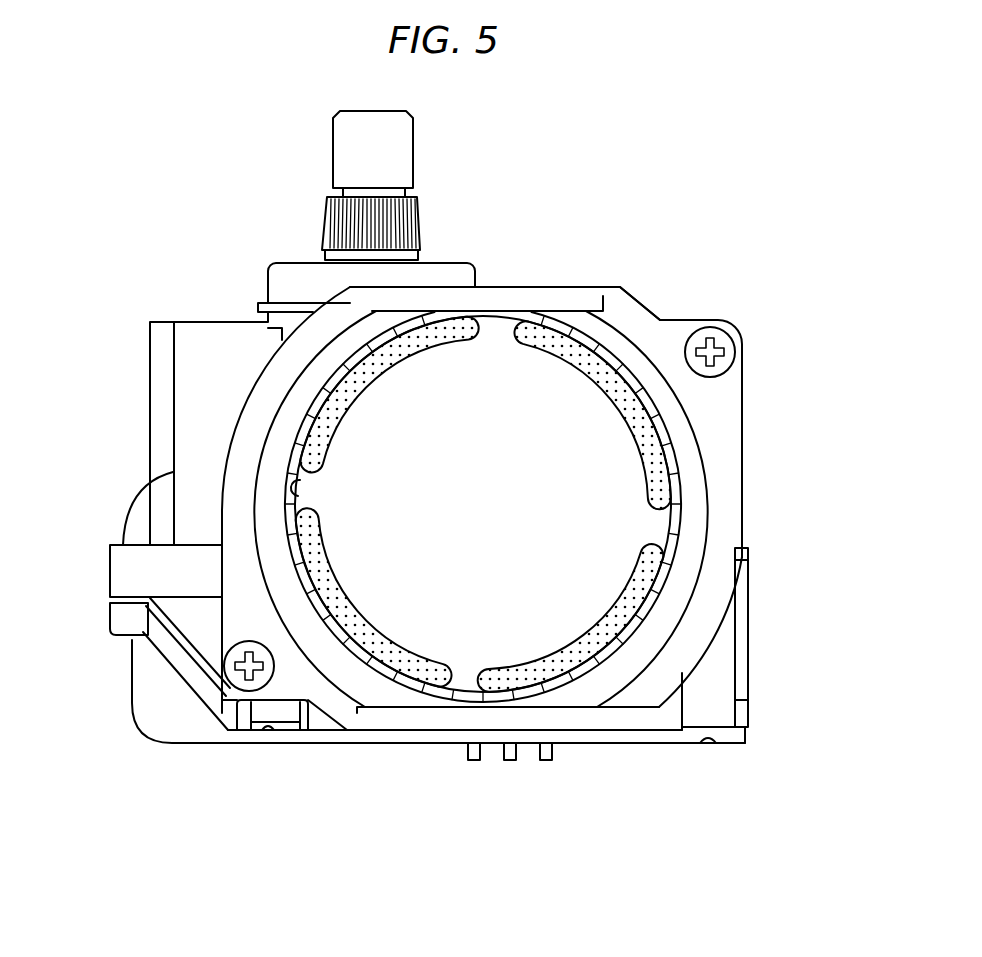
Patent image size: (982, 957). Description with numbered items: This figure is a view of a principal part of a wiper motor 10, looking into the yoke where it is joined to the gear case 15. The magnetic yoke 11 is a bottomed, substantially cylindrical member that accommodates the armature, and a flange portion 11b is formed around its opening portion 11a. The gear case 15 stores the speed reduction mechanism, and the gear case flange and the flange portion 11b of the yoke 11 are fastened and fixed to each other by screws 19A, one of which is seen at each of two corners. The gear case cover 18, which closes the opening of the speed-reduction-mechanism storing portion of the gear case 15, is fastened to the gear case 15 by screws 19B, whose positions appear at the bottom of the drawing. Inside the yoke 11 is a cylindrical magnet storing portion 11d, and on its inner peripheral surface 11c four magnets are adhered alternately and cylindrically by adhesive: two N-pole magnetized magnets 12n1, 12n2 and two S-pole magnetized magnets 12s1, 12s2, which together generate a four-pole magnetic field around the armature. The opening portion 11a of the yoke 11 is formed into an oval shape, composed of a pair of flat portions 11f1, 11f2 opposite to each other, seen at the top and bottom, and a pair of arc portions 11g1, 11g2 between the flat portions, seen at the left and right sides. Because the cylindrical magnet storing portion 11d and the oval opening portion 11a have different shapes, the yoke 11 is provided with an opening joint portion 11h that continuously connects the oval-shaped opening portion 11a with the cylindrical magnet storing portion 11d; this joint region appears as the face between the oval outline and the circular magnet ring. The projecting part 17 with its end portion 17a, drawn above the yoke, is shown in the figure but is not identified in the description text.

The wiper motor 10 is at (448, 786).
The magnetic yoke 11 is at (694, 503).
The opening portion 11a is at (584, 311).
The flange portion 11b is at (736, 448).
The inner peripheral surface 11c is at (300, 476).
The magnet storing portion 11d is at (633, 386).
The flat portion 11f1 is at (540, 308).
The flat portion 11f2 is at (535, 712).
The arc portion 11g1 is at (253, 560).
The arc portion 11g2 is at (697, 580).
The opening joint portion 11h is at (652, 637).
The N-pole magnetized magnet 12n1 is at (337, 410).
The N-pole magnetized magnet 12n2 is at (590, 668).
The S-pole magnetized magnet 12s1 is at (400, 670).
The S-pole magnetized magnet 12s2 is at (642, 412).
The gear case 15 is at (124, 498).
The rotary knob shaft 17 is at (423, 248).
The knob cap 17a is at (405, 149).
The gear case cover 18 is at (641, 738).
The screws 19A is at (704, 330).
The screws 19B is at (265, 742).